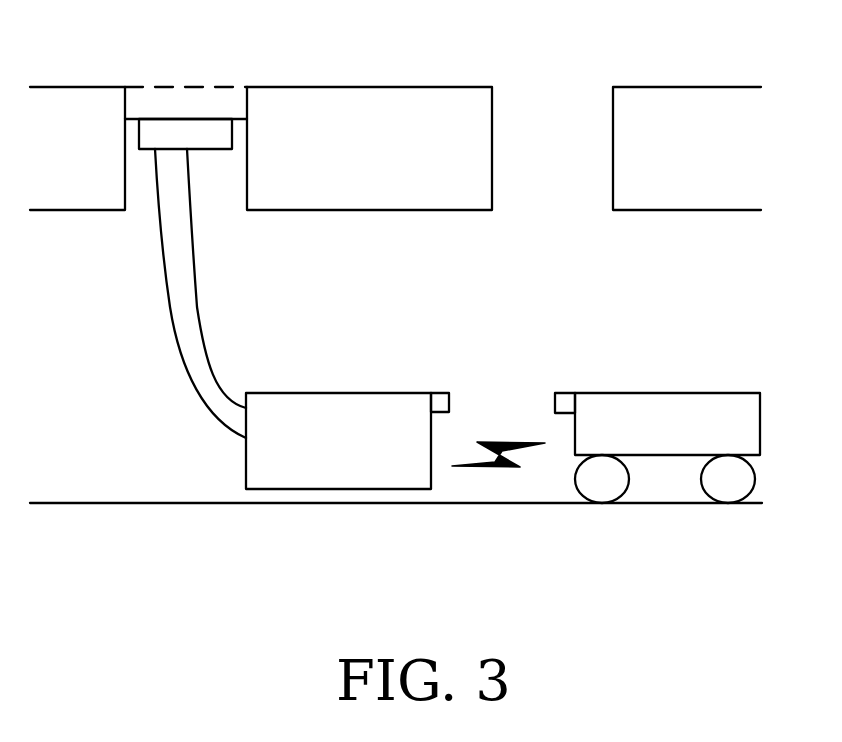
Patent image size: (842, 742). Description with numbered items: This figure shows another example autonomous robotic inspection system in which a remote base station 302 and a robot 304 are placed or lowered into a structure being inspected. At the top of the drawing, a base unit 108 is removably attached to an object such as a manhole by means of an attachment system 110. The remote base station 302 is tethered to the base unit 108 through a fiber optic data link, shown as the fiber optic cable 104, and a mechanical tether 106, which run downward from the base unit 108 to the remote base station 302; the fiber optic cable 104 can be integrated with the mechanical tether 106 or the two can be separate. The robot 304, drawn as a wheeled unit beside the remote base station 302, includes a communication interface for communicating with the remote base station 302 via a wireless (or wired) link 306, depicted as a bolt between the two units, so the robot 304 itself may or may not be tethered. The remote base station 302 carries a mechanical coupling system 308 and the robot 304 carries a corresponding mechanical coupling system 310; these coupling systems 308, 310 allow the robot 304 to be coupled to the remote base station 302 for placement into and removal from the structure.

The fiber optic cable 104 is at (198, 307).
The mechanical tether 106 is at (175, 340).
The base unit 108 is at (190, 150).
The attachment system 110 is at (247, 120).
The remote base station 302 is at (338, 393).
The robot 304 is at (688, 393).
The wireless link 306 is at (490, 438).
The mechanical coupling system 308 is at (435, 393).
The mechanical coupling system 310 is at (560, 393).